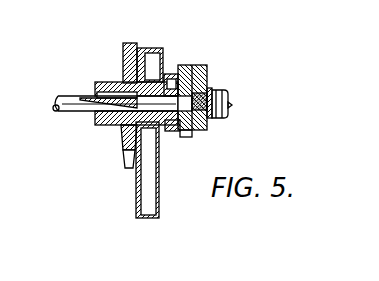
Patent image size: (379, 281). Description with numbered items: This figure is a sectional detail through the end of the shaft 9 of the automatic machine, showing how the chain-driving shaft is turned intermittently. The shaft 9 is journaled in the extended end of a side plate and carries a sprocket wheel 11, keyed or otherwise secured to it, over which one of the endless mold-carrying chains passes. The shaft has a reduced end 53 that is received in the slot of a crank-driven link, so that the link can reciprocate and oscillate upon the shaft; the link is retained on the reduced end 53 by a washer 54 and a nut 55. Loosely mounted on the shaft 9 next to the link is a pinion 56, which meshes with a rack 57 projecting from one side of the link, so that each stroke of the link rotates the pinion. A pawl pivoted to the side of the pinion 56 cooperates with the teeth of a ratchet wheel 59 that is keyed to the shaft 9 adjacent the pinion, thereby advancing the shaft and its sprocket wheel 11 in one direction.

The shaft 9 is at (74, 110).
The sprocket wheel 11 is at (123, 66).
The reduced end of the shaft 53 is at (212, 117).
The washer 54 is at (211, 94).
The nut 55 is at (232, 104).
The pinion 56 is at (188, 136).
The rack 57 is at (187, 66).
The ratchet wheel 59 is at (172, 131).